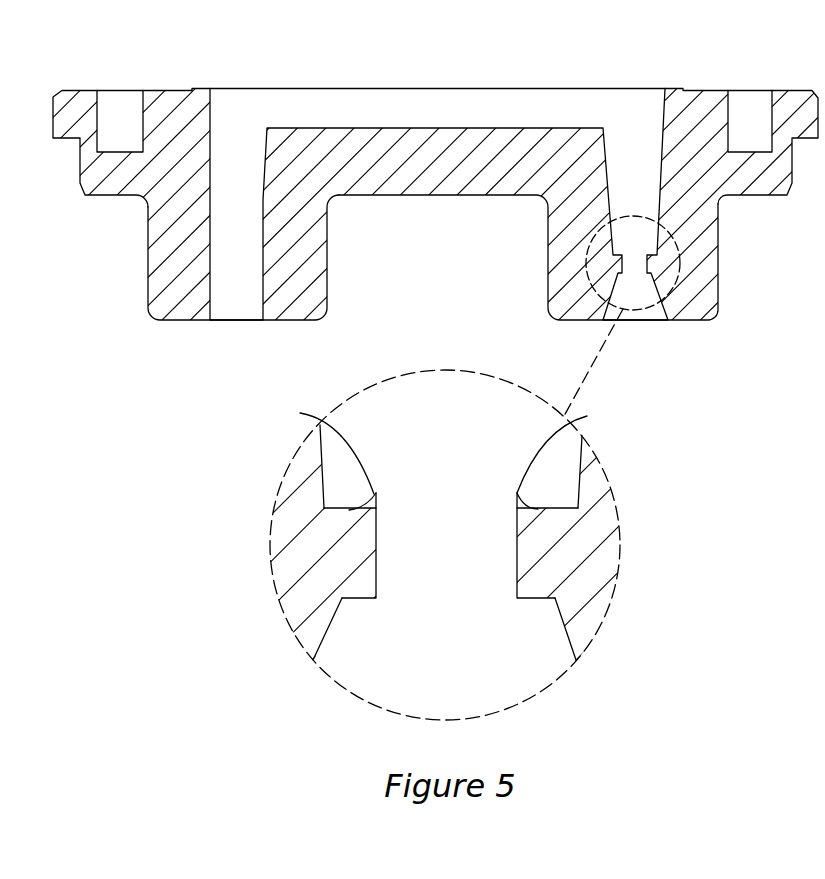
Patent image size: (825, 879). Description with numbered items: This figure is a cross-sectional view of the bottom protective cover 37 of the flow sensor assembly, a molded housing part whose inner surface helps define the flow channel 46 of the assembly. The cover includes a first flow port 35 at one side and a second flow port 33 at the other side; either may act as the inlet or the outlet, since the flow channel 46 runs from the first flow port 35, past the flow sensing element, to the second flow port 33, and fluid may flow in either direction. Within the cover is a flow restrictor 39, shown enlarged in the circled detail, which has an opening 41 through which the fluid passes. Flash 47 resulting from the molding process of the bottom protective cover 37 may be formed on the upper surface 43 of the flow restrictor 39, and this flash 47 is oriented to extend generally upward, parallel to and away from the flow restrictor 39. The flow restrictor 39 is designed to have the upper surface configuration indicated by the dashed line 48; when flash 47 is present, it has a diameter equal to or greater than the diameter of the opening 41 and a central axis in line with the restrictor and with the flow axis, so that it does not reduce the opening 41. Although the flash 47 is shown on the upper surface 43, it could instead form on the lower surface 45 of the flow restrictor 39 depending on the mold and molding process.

The second flow port 33 is at (703, 305).
The first flow port 35 is at (163, 308).
The bottom protective cover 37 is at (680, 63).
The flow restrictor 39 is at (363, 572).
The opening 41 is at (458, 577).
The upper surface 43 is at (560, 510).
The lower surface 45 is at (538, 600).
The flow channel 46 is at (287, 110).
The flash 47 is at (301, 413).
The dashed line 48 is at (540, 514).